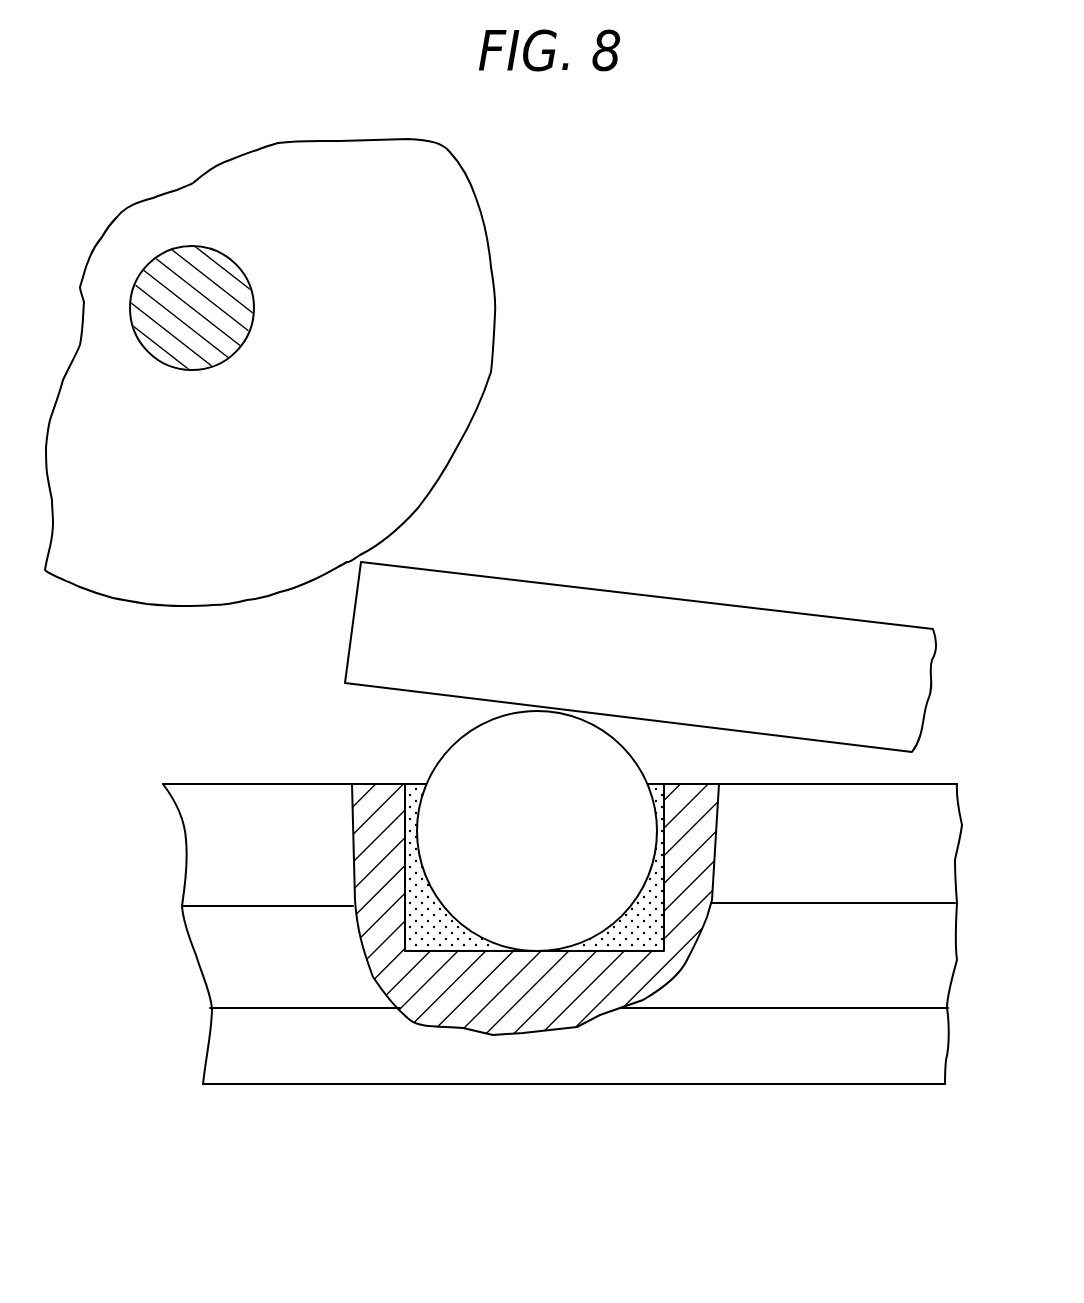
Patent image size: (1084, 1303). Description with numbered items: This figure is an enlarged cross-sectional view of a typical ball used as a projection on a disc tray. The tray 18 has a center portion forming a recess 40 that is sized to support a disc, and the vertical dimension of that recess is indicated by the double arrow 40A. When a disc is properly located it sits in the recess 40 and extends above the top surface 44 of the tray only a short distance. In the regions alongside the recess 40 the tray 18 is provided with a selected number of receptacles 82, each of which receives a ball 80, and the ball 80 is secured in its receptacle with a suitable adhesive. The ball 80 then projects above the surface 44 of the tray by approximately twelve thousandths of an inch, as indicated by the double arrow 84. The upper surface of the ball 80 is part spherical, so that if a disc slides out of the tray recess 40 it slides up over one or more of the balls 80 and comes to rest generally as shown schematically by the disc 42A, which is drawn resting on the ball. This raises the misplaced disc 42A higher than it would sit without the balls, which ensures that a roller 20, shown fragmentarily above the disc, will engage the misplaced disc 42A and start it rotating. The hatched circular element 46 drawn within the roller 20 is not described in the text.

The tray 18 is at (830, 1042).
The roller 20 is at (463, 283).
The recess 40 is at (240, 862).
The double arrow 40A is at (783, 784).
The disc 42A is at (713, 610).
The top surface 44 is at (237, 784).
The pin 46 is at (231, 283).
The ball 80 is at (543, 920).
The receptacle 82 is at (627, 930).
The double arrow 84 is at (545, 711).